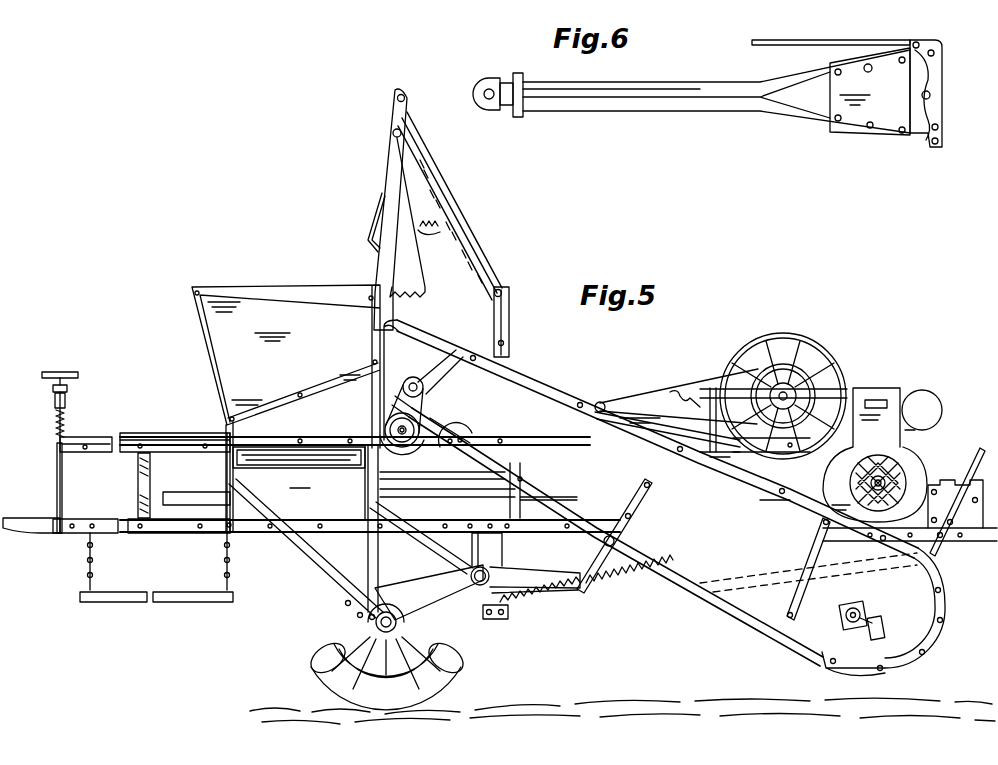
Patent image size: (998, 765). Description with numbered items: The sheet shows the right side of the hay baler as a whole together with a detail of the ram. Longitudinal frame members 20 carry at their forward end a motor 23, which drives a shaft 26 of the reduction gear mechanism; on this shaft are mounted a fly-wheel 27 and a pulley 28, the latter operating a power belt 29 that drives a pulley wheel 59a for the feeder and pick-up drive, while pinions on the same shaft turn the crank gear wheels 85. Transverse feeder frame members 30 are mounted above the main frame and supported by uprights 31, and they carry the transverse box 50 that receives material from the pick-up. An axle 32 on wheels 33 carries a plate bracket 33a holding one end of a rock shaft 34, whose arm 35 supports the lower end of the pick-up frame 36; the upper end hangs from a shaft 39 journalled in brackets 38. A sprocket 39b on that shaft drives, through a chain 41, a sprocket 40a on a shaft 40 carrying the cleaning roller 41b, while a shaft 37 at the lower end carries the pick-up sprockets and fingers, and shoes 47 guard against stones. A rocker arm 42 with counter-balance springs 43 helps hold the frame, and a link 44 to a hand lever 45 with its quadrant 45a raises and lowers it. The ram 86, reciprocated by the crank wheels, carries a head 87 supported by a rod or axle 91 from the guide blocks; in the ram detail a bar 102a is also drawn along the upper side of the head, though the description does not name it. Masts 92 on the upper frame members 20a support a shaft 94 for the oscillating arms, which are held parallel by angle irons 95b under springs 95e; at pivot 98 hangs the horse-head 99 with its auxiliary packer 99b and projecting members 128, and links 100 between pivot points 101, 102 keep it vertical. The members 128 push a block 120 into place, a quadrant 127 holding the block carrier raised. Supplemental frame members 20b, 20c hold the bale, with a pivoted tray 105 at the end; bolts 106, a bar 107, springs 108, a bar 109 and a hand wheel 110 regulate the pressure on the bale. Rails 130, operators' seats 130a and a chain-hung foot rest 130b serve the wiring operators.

In FIG. 5, the longitudinal frame members 20 is at (572, 525).
In FIG. 5, the upper main frame members 20a is at (420, 412).
In FIG. 5, the lower supplemental frame members 20b is at (103, 508).
In FIG. 5, the upper supplemental frame members 20c is at (103, 452).
In FIG. 5, the motor 23 is at (878, 388).
In FIG. 5, the shaft 26 is at (805, 380).
In FIG. 5, the fly-wheel 27 is at (790, 333).
In FIG. 5, the pulley 28 is at (740, 370).
In FIG. 5, the power belt 29 is at (658, 400).
In FIG. 5, the feeder frame members 30 is at (367, 470).
In FIG. 5, the uprights 31 is at (575, 493).
In FIG. 5, the axle 32 is at (345, 630).
In FIG. 5, the wheels 33 is at (330, 686).
In FIG. 5, the plate bracket 33a is at (410, 600).
In FIG. 5, the rock shaft 34 is at (480, 566).
In FIG. 5, the arm 35 is at (560, 600).
In FIG. 5, the pick-up frame 36 is at (778, 620).
In FIG. 5, the shaft 37 is at (848, 612).
In FIG. 5, the brackets 38 is at (385, 400).
In FIG. 5, the shaft 39 is at (411, 377).
In FIG. 5, the sprocket 39b is at (440, 388).
In FIG. 5, the shaft 40 is at (385, 430).
In FIG. 5, the sprocket 40a is at (395, 423).
In FIG. 5, the chain 41 is at (440, 410).
In FIG. 5, the roller 41b is at (408, 452).
In FIG. 5, the rocker arm 42 is at (485, 605).
In FIG. 5, the counter-balance springs 43 is at (627, 590).
In FIG. 5, the link 44 is at (678, 600).
In FIG. 5, the hand lever 45 is at (975, 470).
In FIG. 5, the quadrant 45a is at (950, 543).
In FIG. 5, the shoes 47 is at (826, 663).
In FIG. 5, the transverse box 50 is at (230, 325).
In FIG. 5, the pulley wheel 59a is at (477, 452).
In FIG. 5, the crank gear wheels 85 is at (686, 388).
In FIG. 6, the ram 86 is at (668, 100).
In FIG. 5, the ram 86 is at (440, 490).
In FIG. 6, the head 87 is at (944, 62).
In FIG. 6, the rod or axle 91 is at (930, 96).
In FIG. 5, the masts 92 is at (512, 300).
In FIG. 5, the shaft 94 is at (506, 342).
In FIG. 5, the angle irons 95b is at (440, 192).
In FIG. 5, the springs 95e is at (440, 230).
In FIG. 5, the pivot 98 is at (392, 133).
In FIG. 5, the horse-head 99 is at (392, 188).
In FIG. 5, the auxiliary packer 99b is at (405, 257).
In FIG. 5, the links 100 is at (472, 238).
In FIG. 5, the pivot point 101 is at (503, 292).
In FIG. 5, the pivot point 102 is at (430, 85).
In FIG. 6, the bar 102a is at (845, 42).
In FIG. 5, the pivoted tray 105 is at (25, 535).
In FIG. 5, the bolts 106 is at (57, 477).
In FIG. 5, the bar 107 is at (67, 388).
In FIG. 5, the springs 108 is at (65, 425).
In FIG. 5, the bar 109 is at (55, 403).
In FIG. 5, the hand wheel 110 is at (72, 372).
In FIG. 5, the block 120 is at (152, 483).
In FIG. 6, the quadrant 127 is at (864, 66).
In FIG. 5, the projecting members 128 is at (367, 240).
In FIG. 5, the back rests or rails 130 is at (178, 430).
In FIG. 5, the operators' seats 130a is at (150, 535).
In FIG. 5, the foot rest 130b is at (195, 590).